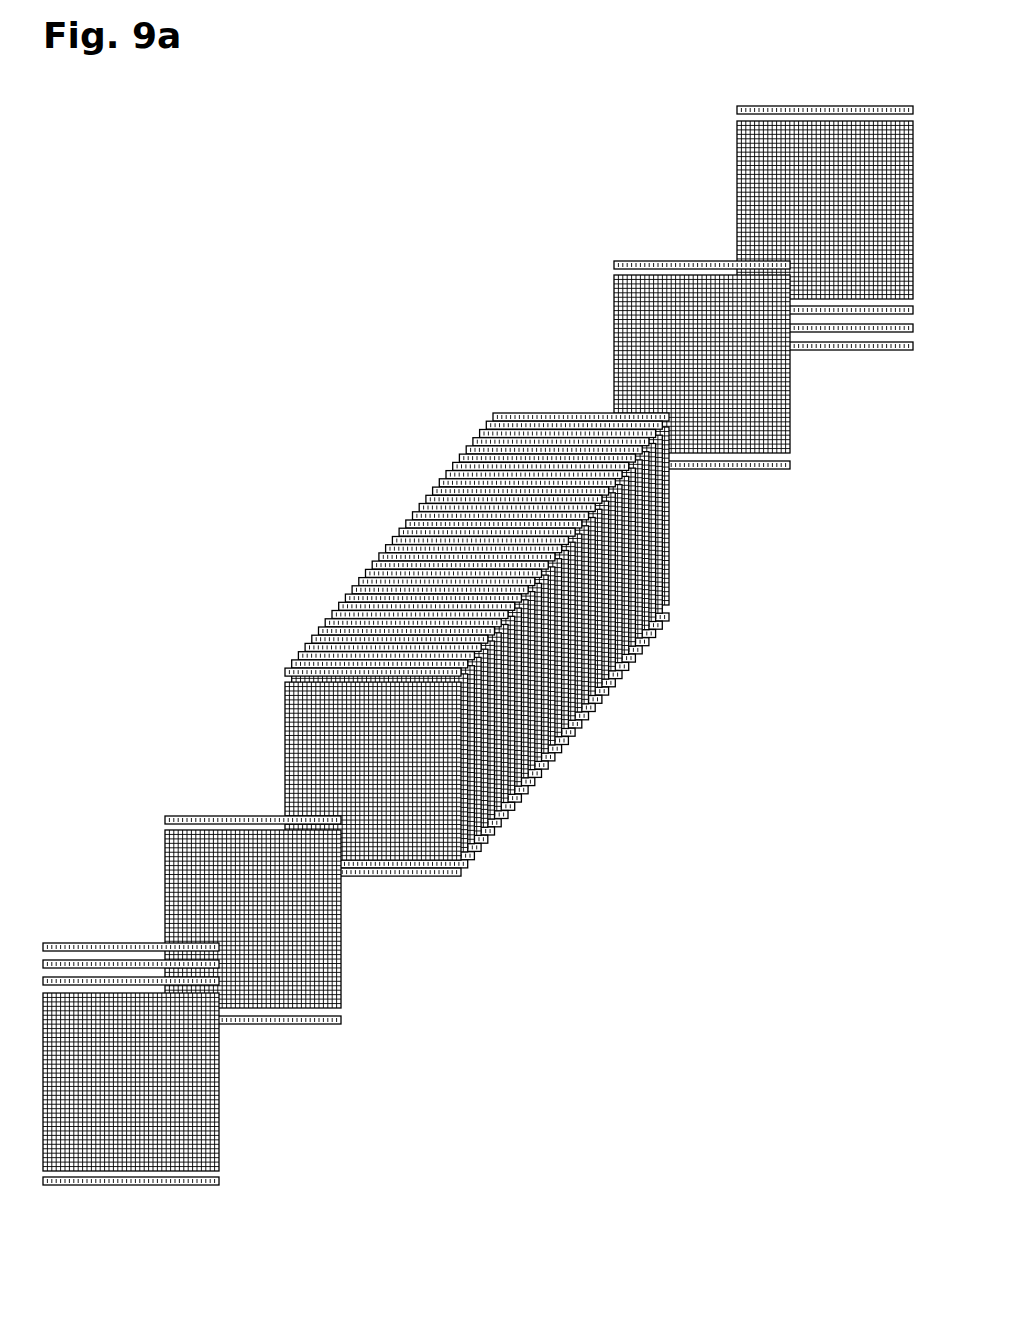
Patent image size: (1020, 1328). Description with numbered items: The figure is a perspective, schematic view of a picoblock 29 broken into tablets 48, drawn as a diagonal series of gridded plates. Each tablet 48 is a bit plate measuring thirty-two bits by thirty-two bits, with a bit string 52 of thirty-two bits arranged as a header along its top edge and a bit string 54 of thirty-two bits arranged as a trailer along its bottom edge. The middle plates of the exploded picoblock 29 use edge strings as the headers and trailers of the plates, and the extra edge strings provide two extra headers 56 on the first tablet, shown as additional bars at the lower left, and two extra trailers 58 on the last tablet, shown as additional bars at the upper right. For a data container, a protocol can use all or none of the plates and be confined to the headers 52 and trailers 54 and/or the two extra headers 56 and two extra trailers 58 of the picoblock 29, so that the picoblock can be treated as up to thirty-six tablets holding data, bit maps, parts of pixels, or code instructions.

The picoblock 29 is at (353, 538).
The tablet 48 is at (273, 919).
The bit string arranged as a header 52 is at (177, 806).
The bit string arranged as a trailer 54 is at (296, 1019).
The extra headers 56 is at (45, 950).
The extra trailers 58 is at (858, 331).